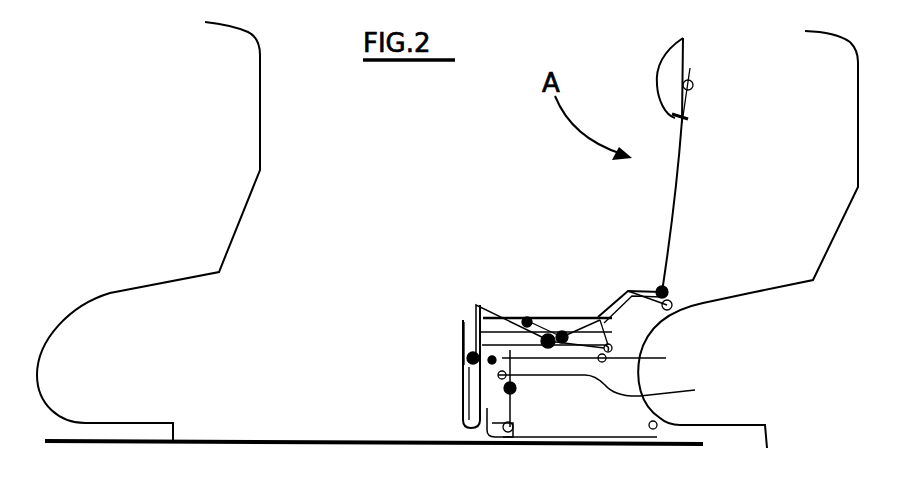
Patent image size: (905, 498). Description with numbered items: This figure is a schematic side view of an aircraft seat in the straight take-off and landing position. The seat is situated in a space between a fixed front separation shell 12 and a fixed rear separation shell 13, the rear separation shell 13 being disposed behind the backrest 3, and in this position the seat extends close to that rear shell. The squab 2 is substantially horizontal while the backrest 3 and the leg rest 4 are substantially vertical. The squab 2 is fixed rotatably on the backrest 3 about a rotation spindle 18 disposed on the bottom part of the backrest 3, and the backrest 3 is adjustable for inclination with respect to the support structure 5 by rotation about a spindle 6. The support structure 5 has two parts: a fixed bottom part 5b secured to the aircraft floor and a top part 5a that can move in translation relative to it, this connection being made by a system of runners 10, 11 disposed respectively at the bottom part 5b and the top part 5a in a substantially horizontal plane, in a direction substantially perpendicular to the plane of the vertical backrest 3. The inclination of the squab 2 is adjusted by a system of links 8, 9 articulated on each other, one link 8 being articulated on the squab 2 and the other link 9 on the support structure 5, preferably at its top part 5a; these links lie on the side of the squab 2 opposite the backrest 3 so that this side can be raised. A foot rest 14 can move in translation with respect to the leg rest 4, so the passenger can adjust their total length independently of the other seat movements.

The squab 2 is at (550, 315).
The backrest 3 is at (678, 178).
The leg rest 4 is at (462, 391).
The support structure 5 is at (552, 423).
The top part 5a is at (600, 318).
The fixed bottom part 5b is at (490, 410).
The spindle 6 is at (628, 292).
The link 8 is at (503, 317).
The link 9 is at (470, 373).
The runner 10 is at (613, 390).
The runner 11 is at (601, 360).
The fixed front separation shell 12 is at (258, 77).
The fixed rear separation shell 13 is at (858, 69).
The foot rest 14 is at (462, 408).
The rotation spindle 18 is at (670, 325).